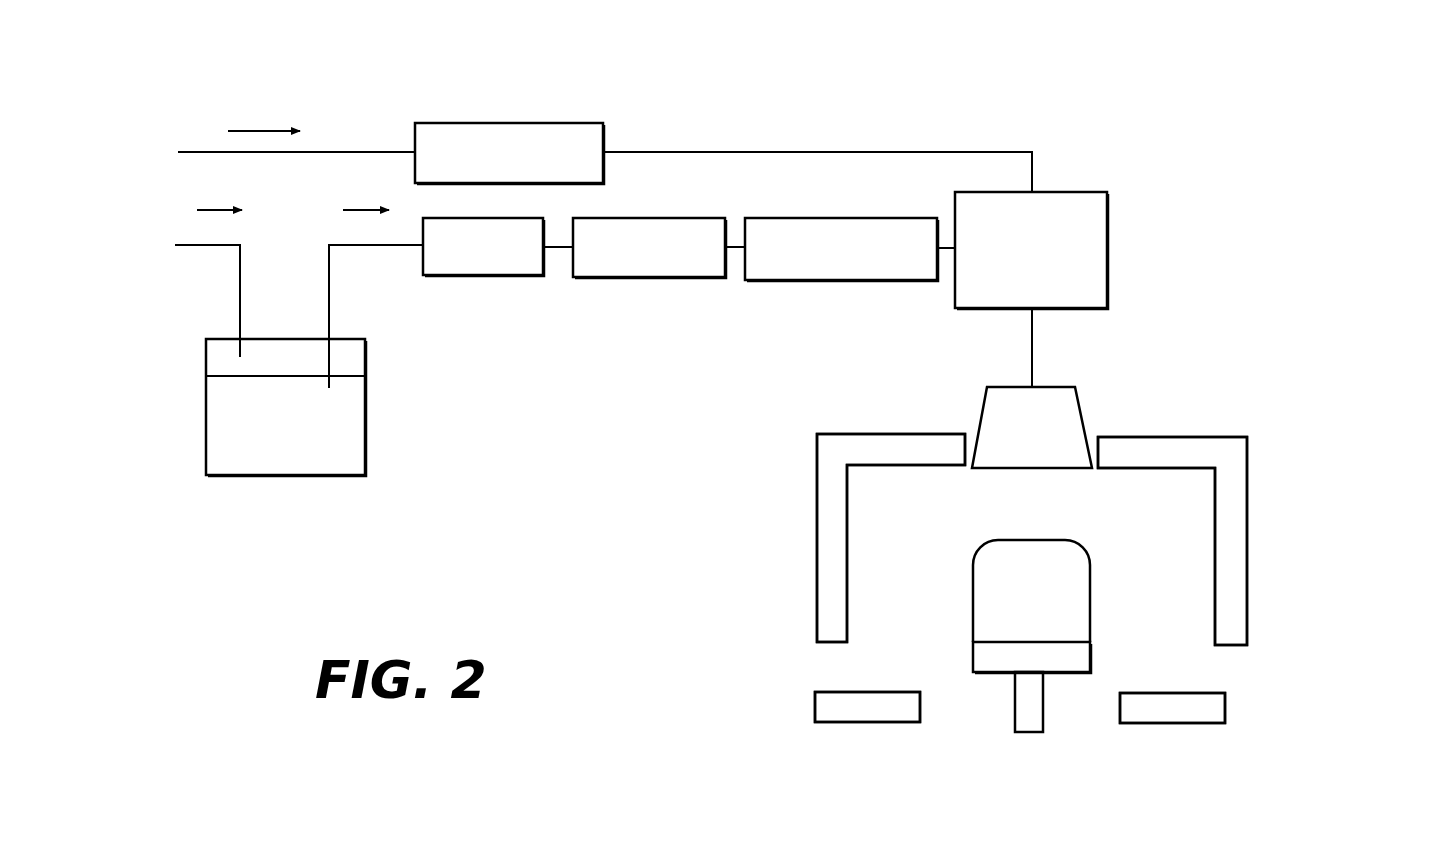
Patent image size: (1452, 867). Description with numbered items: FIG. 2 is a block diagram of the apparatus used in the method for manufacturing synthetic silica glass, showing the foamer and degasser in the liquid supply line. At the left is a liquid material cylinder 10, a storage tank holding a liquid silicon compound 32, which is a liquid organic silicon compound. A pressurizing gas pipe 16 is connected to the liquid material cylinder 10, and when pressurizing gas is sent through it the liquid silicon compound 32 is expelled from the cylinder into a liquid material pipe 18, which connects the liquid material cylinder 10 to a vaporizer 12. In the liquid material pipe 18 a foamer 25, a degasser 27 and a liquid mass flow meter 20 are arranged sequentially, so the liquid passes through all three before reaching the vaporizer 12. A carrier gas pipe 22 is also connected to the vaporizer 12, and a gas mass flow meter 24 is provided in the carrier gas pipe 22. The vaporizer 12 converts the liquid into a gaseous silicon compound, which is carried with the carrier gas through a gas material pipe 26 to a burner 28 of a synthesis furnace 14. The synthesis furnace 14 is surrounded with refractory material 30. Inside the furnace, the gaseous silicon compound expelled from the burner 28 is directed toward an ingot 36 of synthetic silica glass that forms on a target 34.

The liquid material cylinder 10 is at (206, 362).
The vaporizer 12 is at (1070, 192).
The synthesis furnace 14 is at (1226, 421).
The pressurizing gas pipe 16 is at (208, 245).
The liquid material pipe 18 is at (368, 246).
The liquid mass flow meter 20 is at (807, 281).
The carrier gas pipe 22 is at (372, 151).
The gas mass flow meter 24 is at (458, 123).
The foamer 25 is at (490, 277).
The gas material pipe 26 is at (1032, 350).
The degasser 27 is at (642, 279).
The burner 28 is at (980, 407).
The refractory material 30 is at (817, 457).
The liquid silicon compound 32 is at (206, 420).
The target 34 is at (973, 657).
The ingot 36 is at (1090, 577).